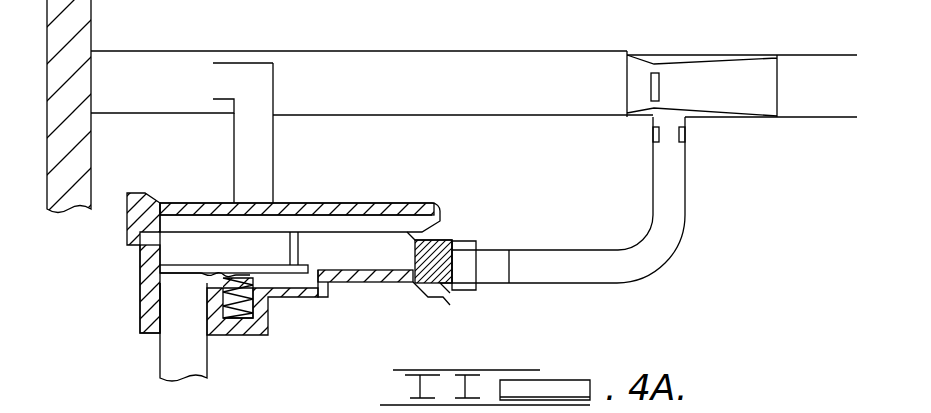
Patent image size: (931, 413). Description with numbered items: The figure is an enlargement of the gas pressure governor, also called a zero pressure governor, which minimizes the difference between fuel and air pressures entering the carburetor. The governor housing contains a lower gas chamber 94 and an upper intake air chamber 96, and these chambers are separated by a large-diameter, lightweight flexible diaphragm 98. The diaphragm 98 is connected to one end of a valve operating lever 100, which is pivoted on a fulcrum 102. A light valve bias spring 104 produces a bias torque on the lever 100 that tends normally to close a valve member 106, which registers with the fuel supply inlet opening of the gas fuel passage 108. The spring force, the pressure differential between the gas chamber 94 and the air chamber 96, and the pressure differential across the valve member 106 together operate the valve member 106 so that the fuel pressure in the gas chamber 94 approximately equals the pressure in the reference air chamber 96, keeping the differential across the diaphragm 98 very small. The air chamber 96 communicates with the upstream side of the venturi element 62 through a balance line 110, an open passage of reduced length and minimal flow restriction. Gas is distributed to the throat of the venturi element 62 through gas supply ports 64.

The venturi element 62 is at (653, 110).
The gas supply ports 64 is at (651, 86).
The gas chamber 94 is at (397, 268).
The intake air chamber 96 is at (185, 207).
The flexible diaphragm 98 is at (360, 227).
The valve operating lever 100 is at (265, 263).
The fulcrum 102 is at (200, 276).
The valve bias spring 104 is at (268, 303).
The valve member 106 is at (160, 273).
The gas fuel passage 108 is at (170, 362).
The balance line 110 is at (262, 137).